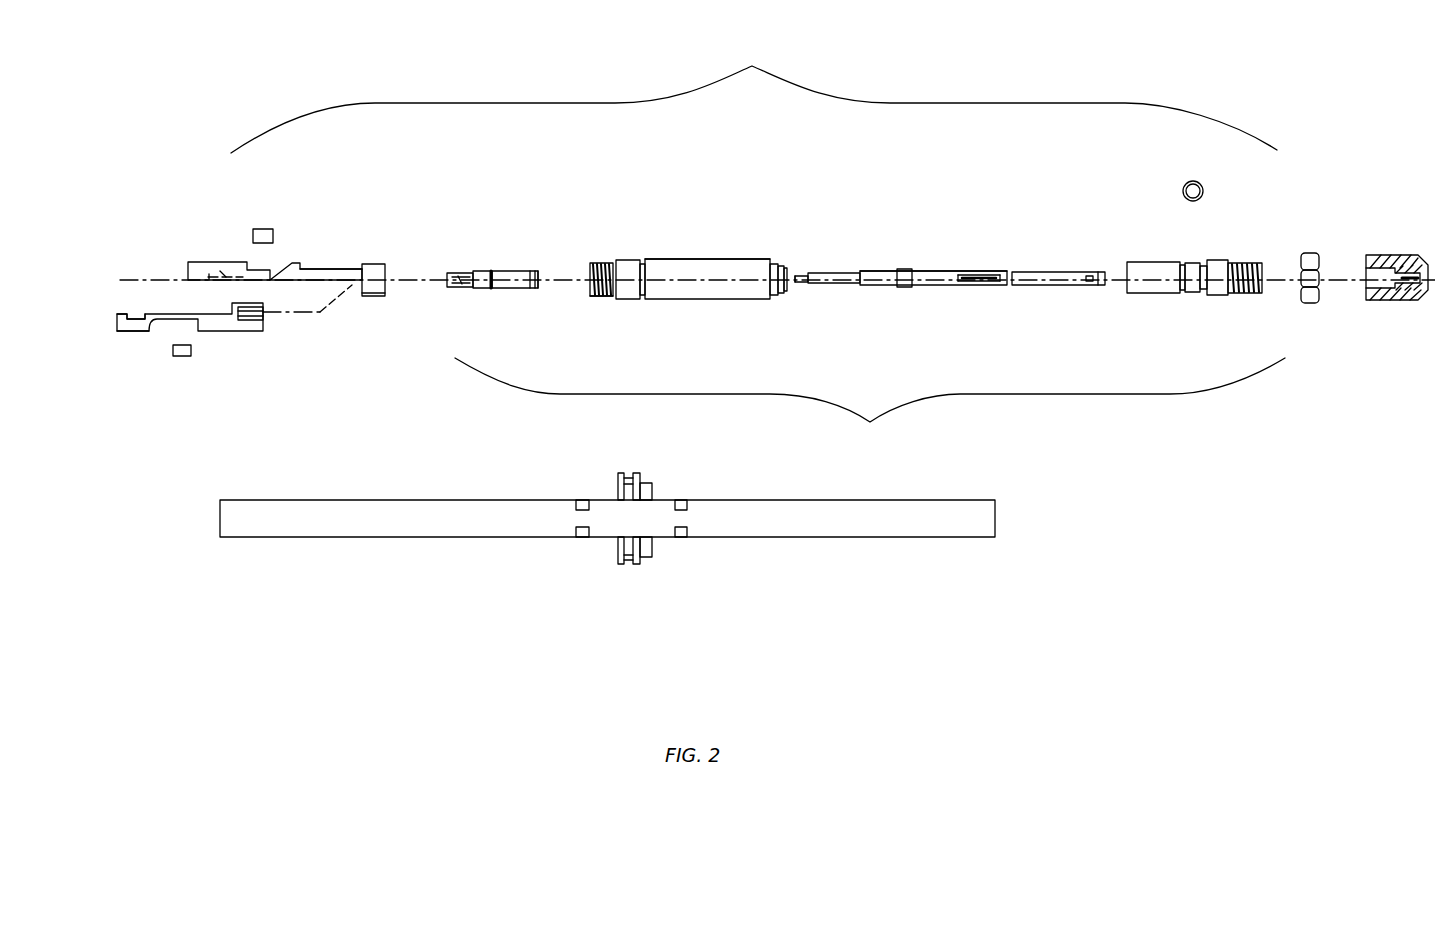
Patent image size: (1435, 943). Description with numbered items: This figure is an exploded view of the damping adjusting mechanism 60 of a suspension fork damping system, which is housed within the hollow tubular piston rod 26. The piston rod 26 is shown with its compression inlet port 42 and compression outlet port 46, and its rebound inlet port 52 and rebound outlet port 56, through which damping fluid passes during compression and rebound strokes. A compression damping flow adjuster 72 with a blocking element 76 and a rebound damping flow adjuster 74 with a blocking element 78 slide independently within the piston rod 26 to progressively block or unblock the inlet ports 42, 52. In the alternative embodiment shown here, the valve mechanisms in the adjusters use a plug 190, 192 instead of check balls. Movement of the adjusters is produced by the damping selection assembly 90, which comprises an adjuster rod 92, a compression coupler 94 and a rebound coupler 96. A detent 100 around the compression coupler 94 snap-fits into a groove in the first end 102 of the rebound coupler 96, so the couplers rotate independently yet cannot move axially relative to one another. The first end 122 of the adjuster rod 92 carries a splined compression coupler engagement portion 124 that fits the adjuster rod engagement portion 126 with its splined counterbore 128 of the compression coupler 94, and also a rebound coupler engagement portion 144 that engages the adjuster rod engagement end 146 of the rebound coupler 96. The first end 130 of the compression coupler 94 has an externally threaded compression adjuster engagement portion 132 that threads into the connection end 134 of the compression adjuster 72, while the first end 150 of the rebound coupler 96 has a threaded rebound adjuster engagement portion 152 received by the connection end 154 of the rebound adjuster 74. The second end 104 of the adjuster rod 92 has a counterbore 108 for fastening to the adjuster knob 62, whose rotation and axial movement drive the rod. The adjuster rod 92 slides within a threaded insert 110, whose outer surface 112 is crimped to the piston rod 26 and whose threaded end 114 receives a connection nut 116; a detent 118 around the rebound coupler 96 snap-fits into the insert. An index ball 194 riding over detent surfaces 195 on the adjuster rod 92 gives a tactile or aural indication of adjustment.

The piston rod 26 is at (805, 527).
The compression inlet port 42 is at (582, 537).
The compression outlet port 46 is at (682, 537).
The rebound inlet port 52 is at (680, 502).
The rebound outlet port 56 is at (580, 500).
The damping adjusting mechanism 60 is at (754, 97).
The adjuster knob 62 is at (1410, 297).
The compression damping flow adjuster 72 is at (243, 327).
The rebound damping flow adjuster 74 is at (332, 262).
The blocking element 76 is at (139, 325).
The blocking element 78 is at (348, 268).
The damping selection assembly 90 is at (870, 405).
The adjuster rod 92 is at (927, 273).
The compression coupler 94 is at (503, 270).
The rebound coupler 96 is at (687, 260).
The detent 100 is at (492, 273).
The first end 102 is at (612, 262).
The second end 104 is at (1061, 291).
The counterbore 108 is at (1097, 285).
The threaded insert 110 is at (1160, 268).
The outer surface 112 is at (1201, 259).
The threaded end 114 is at (1253, 297).
The connection nut 116 is at (1310, 253).
The detent 118 is at (773, 263).
The first end 122 is at (847, 254).
The compression coupler engagement portion 124 is at (800, 282).
The adjuster rod engagement portion 126 is at (538, 288).
The splined counterbore 128 is at (538, 270).
The first end 130 is at (453, 272).
The compression adjuster engagement portion 132 is at (467, 287).
The connection end 134 is at (263, 320).
The rebound coupler engagement portion 144 is at (903, 270).
The adjuster rod engagement end 146 is at (668, 258).
The first end 150 is at (598, 262).
The rebound adjuster engagement portion 152 is at (602, 296).
The connection end 154 is at (373, 263).
The plug 190 is at (180, 357).
The plug 192 is at (260, 230).
The index ball 194 is at (1185, 186).
The detent surfaces 195 is at (973, 273).